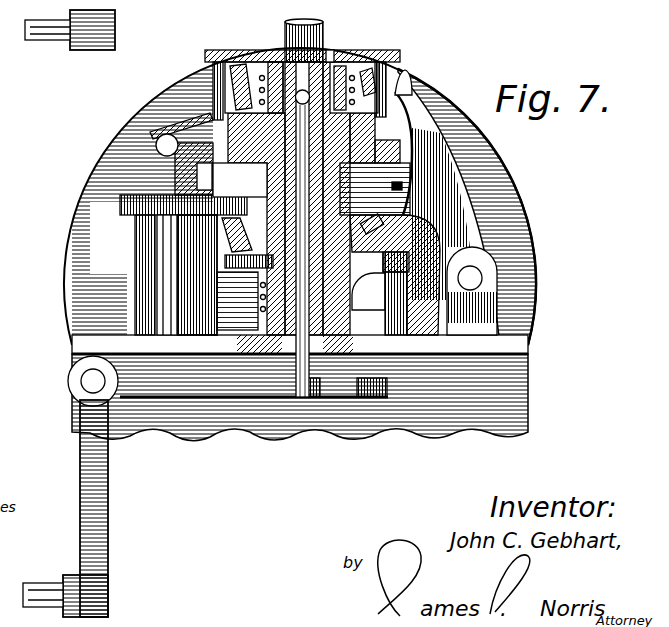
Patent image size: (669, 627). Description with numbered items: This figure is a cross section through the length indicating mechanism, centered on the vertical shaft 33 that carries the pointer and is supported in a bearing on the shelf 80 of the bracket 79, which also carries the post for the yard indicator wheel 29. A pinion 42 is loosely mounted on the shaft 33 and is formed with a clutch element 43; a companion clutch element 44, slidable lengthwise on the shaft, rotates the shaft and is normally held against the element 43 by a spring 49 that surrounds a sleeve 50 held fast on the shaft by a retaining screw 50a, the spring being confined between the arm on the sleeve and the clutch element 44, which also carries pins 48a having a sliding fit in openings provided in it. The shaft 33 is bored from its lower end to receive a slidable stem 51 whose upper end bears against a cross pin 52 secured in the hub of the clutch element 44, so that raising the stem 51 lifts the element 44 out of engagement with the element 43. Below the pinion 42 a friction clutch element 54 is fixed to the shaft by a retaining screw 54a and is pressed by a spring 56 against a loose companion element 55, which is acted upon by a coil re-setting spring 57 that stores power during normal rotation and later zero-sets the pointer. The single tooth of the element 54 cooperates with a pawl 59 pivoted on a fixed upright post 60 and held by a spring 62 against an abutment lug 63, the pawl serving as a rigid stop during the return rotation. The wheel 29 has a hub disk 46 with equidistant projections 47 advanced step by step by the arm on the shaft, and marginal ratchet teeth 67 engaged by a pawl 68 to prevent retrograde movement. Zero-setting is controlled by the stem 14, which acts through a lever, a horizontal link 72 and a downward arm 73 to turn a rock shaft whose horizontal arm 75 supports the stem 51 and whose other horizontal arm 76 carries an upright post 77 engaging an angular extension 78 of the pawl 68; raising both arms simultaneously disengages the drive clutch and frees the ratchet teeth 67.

The stem 14 is at (93, 381).
The yard indicator wheel 29 is at (382, 90).
The vertical shaft 33 is at (317, 33).
The pinion 42 is at (414, 118).
The clutch element 43 is at (157, 141).
The clutch element 44 is at (190, 110).
The disk 46 is at (411, 212).
The projections 47 is at (395, 232).
The pins 48a is at (427, 90).
The spring 49 is at (240, 88).
The sleeve 50 is at (402, 50).
The retaining screw 50a is at (333, 64).
The slidable stem 51 is at (302, 382).
The cross pin 52 is at (405, 102).
The friction clutch element 54 is at (226, 224).
The retaining screw 54a is at (393, 184).
The companion clutch element 55 is at (396, 214).
The spring 56 is at (262, 290).
The coil re-setting spring 57 is at (228, 260).
The pawl 59 is at (230, 204).
The upright post 60 is at (214, 300).
The spring 62 is at (150, 213).
The abutment lug 63 is at (145, 243).
The ratchet teeth 67 is at (183, 172).
The pawl 68 is at (470, 182).
The horizontal link 72 is at (40, 592).
The arm 73 is at (108, 492).
The horizontal arm 75 is at (228, 392).
The horizontal arm 76 is at (362, 392).
The upright post 77 is at (398, 380).
The angular extension 78 is at (426, 303).
The bracket 79 is at (531, 283).
The shelf 80 is at (532, 352).